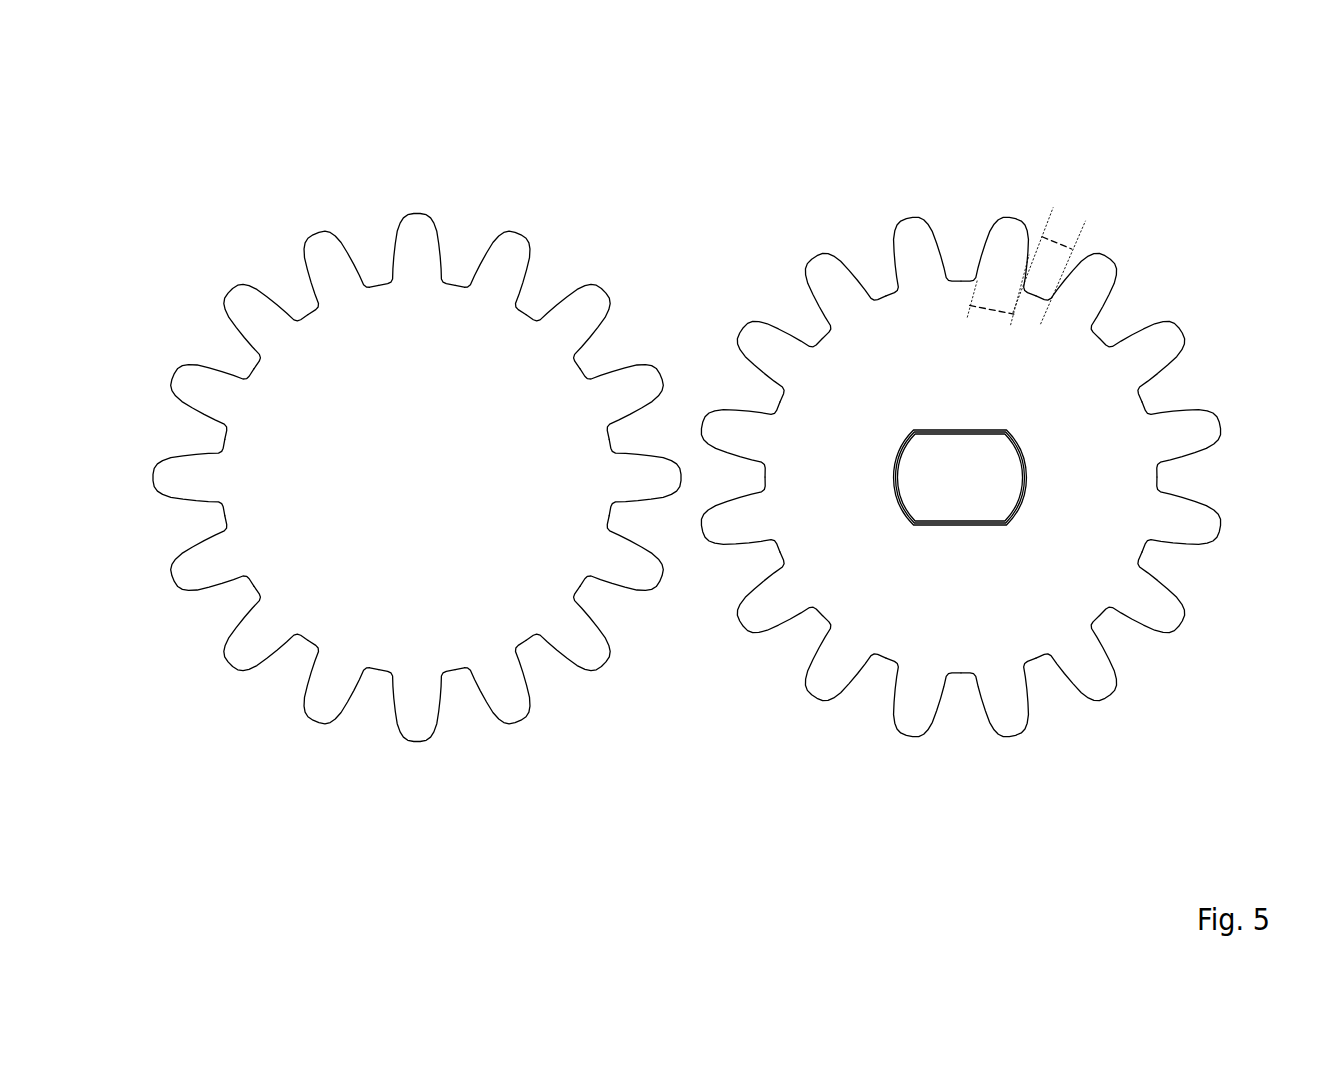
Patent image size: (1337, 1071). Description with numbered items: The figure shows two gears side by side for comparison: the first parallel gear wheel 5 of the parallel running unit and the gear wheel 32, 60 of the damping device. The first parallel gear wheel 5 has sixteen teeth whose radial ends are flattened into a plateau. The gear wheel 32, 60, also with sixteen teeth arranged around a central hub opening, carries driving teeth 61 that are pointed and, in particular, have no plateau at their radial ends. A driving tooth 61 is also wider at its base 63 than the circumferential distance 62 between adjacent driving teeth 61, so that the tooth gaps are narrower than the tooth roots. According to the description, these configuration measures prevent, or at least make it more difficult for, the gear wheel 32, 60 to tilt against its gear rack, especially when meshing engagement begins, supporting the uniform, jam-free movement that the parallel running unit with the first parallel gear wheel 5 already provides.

The first parallel gear wheel 5 is at (386, 158).
The gear wheel 32 is at (961, 403).
The gear wheel 60 is at (961, 403).
The driving teeth 61 is at (832, 255).
The circumferential distance 62 is at (1060, 244).
The base 63 is at (986, 322).